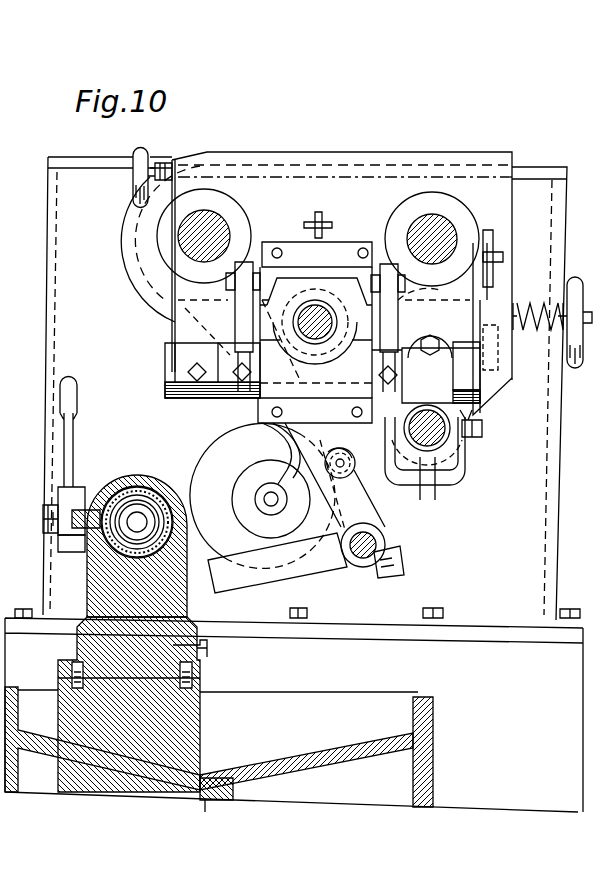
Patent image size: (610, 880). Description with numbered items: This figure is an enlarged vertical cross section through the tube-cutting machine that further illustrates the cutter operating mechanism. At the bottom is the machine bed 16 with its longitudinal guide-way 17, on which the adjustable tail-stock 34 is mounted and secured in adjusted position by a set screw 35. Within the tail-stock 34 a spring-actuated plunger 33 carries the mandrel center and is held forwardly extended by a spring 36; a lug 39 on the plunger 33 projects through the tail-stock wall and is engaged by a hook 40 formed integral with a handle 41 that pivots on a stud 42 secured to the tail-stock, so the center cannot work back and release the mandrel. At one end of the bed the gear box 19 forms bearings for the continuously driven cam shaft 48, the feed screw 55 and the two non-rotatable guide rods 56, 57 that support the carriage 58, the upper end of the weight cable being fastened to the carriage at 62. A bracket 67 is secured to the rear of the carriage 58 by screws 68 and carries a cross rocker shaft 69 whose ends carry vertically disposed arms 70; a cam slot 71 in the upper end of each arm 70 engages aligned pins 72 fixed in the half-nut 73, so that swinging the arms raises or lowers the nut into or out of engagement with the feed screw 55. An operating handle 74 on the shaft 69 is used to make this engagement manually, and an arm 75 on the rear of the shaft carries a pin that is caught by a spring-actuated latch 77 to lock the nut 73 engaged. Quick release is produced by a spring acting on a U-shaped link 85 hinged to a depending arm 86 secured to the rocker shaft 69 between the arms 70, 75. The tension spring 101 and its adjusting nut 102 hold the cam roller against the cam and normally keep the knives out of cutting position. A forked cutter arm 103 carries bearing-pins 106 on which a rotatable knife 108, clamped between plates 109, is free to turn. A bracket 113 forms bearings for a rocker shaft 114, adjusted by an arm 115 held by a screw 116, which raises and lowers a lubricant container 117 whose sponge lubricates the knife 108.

The machine bed 16 is at (494, 257).
The longitudinal guide-way 17 is at (97, 652).
The gear box 19 is at (536, 180).
The spring-actuated plunger 33 is at (172, 540).
The tail-stock 34 is at (186, 597).
The set screw 35 is at (210, 652).
The spring 36 is at (160, 498).
The lug 39 is at (88, 488).
The hook 40 is at (75, 553).
The handle 41 is at (74, 450).
The stud 42 is at (43, 521).
The cam shaft 48 is at (452, 437).
The feed screw 55 is at (334, 326).
The guide rod 56 is at (224, 224).
The guide rod 57 is at (448, 226).
The carriage 58 is at (390, 153).
The cable attachment point 62 is at (325, 222).
The bracket 67 is at (356, 242).
The screws 68 is at (357, 253).
The cross rocker shaft 69 is at (165, 378).
The arm 70 is at (238, 327).
The cam slot 71 is at (240, 306).
The pins 72 is at (227, 283).
The half-nut 73 is at (300, 270).
The operating handle 74 is at (172, 298).
The arm 75 is at (474, 302).
The spring-actuated latch 77 is at (494, 270).
The U-shaped link 85 is at (466, 472).
The depending arm 86 is at (426, 372).
The tension spring 101 is at (516, 331).
The nut 102 is at (575, 362).
The forked cutter arm 103 is at (262, 426).
The bearing-pin 106 is at (256, 505).
The rotatable knife 108 is at (228, 453).
The plates 109 is at (240, 483).
The bracket 113 is at (362, 488).
The rocker shaft 114 is at (386, 550).
The arm 115 is at (362, 515).
The screw 116 is at (340, 455).
The lubricant container 117 is at (322, 568).